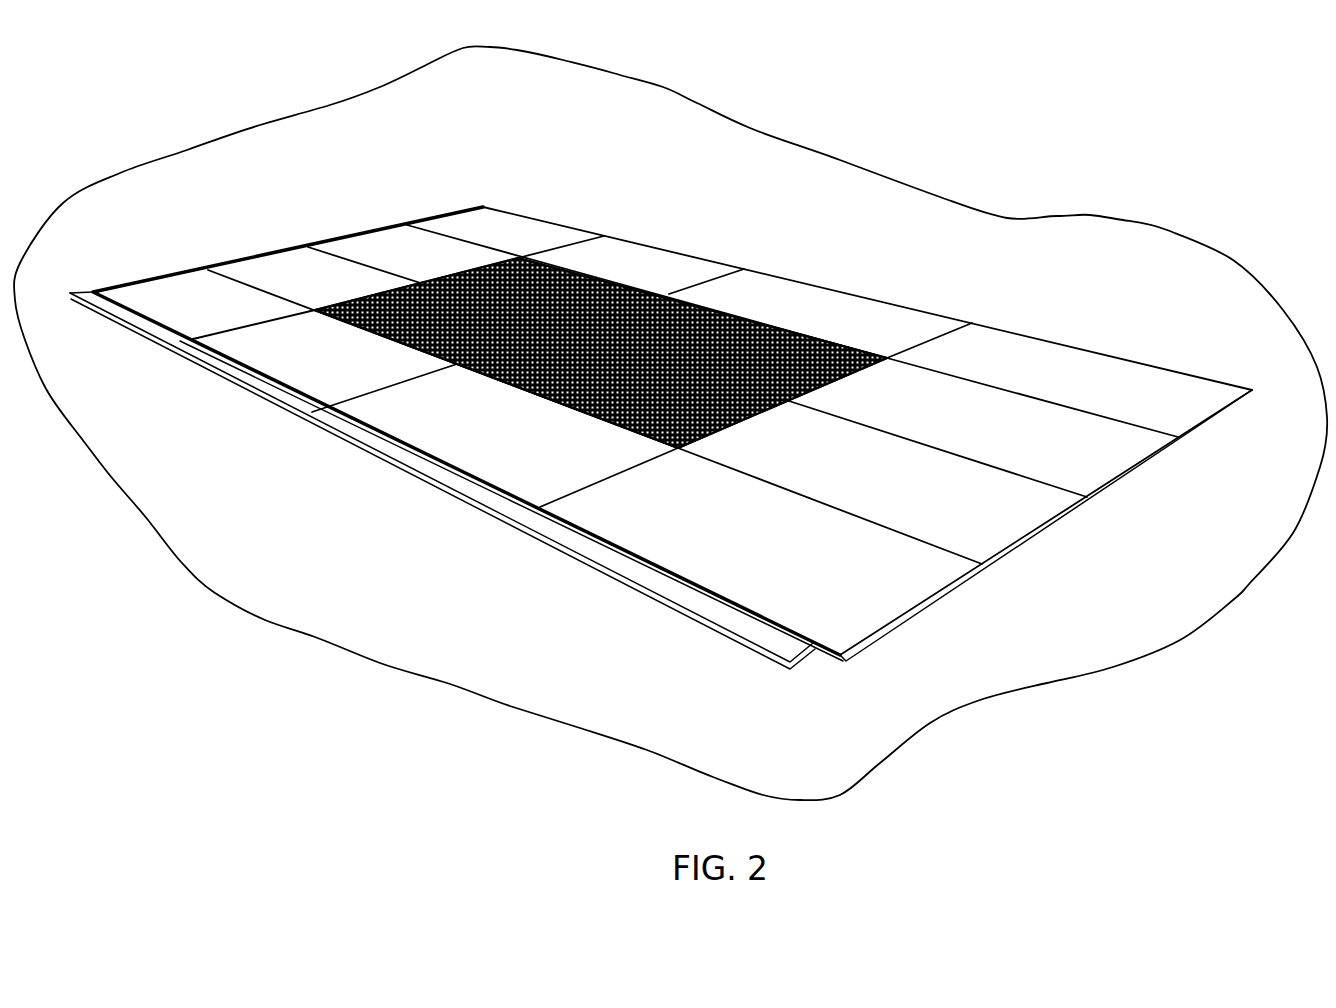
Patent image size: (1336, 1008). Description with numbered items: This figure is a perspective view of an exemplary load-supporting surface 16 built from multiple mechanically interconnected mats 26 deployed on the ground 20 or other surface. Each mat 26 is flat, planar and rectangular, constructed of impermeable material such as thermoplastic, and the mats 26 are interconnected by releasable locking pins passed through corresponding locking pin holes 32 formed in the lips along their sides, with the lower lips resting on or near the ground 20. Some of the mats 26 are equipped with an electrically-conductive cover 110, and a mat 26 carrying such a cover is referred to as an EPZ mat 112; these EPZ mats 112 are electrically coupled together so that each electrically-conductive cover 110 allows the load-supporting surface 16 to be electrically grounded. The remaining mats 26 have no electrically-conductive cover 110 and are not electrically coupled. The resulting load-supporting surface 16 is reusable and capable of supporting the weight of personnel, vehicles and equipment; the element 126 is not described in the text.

The load-supporting surface 16 is at (661, 402).
The ground 20 is at (1191, 565).
The mat 26 is at (672, 385).
The locking pin holes 32 is at (873, 358).
The electrically-conductive cover 110 is at (508, 262).
The EPZ mat 112 is at (403, 292).
The mesh screen 126 is at (472, 267).